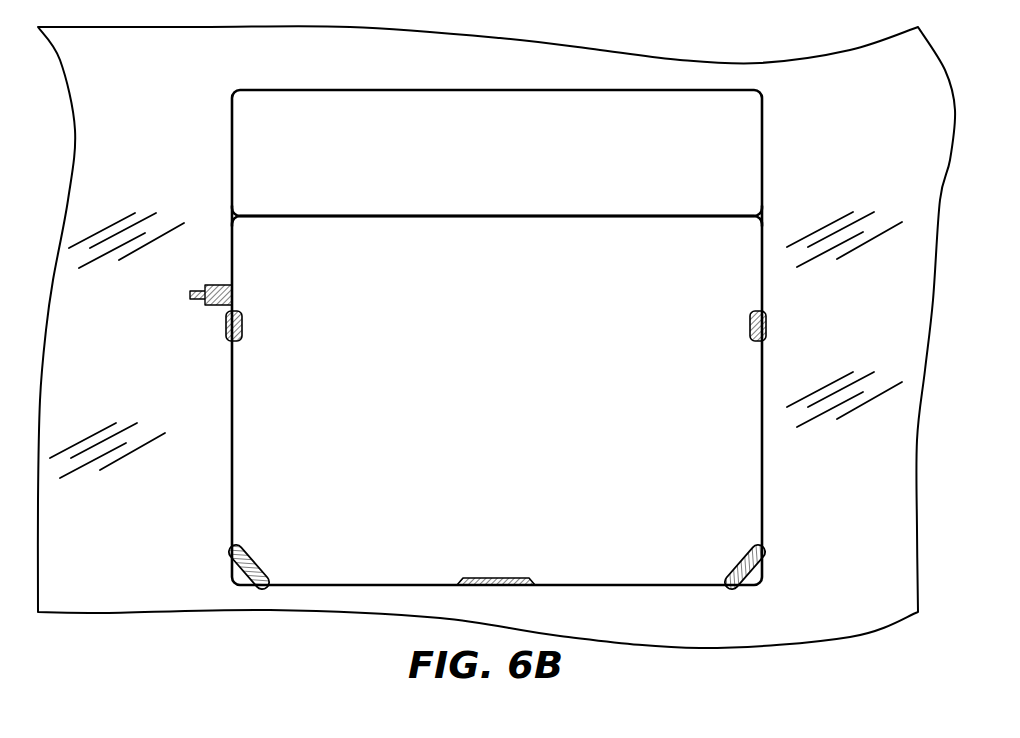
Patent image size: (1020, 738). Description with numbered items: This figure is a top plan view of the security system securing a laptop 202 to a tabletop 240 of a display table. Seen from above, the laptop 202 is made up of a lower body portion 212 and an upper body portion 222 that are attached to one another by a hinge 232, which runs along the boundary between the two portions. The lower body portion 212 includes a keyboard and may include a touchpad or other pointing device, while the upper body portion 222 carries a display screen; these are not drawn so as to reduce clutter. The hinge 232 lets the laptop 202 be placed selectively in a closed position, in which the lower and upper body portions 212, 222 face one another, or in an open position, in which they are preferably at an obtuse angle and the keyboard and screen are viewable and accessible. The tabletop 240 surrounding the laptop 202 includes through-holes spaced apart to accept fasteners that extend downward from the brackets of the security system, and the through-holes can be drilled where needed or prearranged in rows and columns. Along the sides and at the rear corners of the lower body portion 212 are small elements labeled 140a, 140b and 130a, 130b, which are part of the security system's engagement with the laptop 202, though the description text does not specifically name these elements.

The laptop 202 is at (818, 130).
The lower body portion 212 is at (245, 453).
The upper body portion 222 is at (245, 178).
The hinge 232 is at (493, 214).
The tabletop 240 is at (862, 485).
The first clip 140a is at (233, 322).
The second clip 140b is at (757, 325).
The first foot 130a is at (232, 553).
The second foot 130b is at (762, 550).